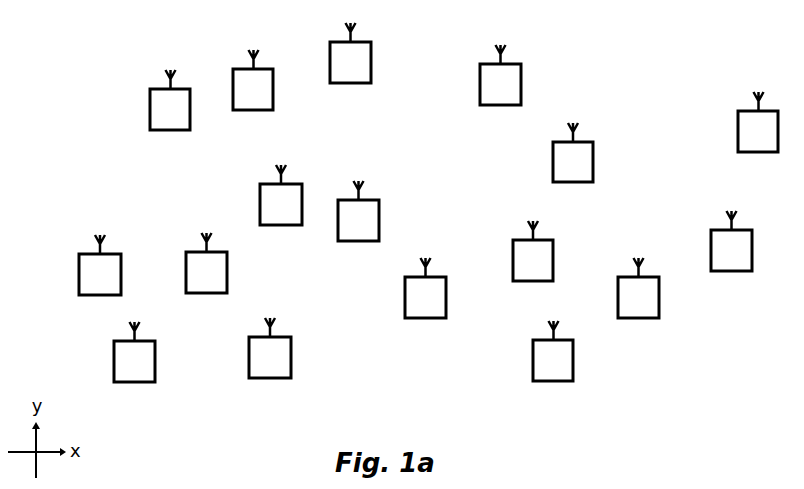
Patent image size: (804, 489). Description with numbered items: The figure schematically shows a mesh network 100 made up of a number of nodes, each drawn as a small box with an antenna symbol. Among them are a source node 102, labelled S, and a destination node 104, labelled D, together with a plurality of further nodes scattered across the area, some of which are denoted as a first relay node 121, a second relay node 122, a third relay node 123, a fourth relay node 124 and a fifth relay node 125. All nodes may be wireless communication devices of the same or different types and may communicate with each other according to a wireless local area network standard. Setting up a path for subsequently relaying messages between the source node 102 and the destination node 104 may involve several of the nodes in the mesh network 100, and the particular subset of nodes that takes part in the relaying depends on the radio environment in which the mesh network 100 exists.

The mesh network 100 is at (128, 43).
The source node 102 is at (114, 362).
The destination node 104 is at (521, 84).
The node R1 121 is at (227, 268).
The node R2 122 is at (291, 352).
The node R3 123 is at (405, 296).
The node R4 124 is at (553, 253).
The node R5 125 is at (593, 168).